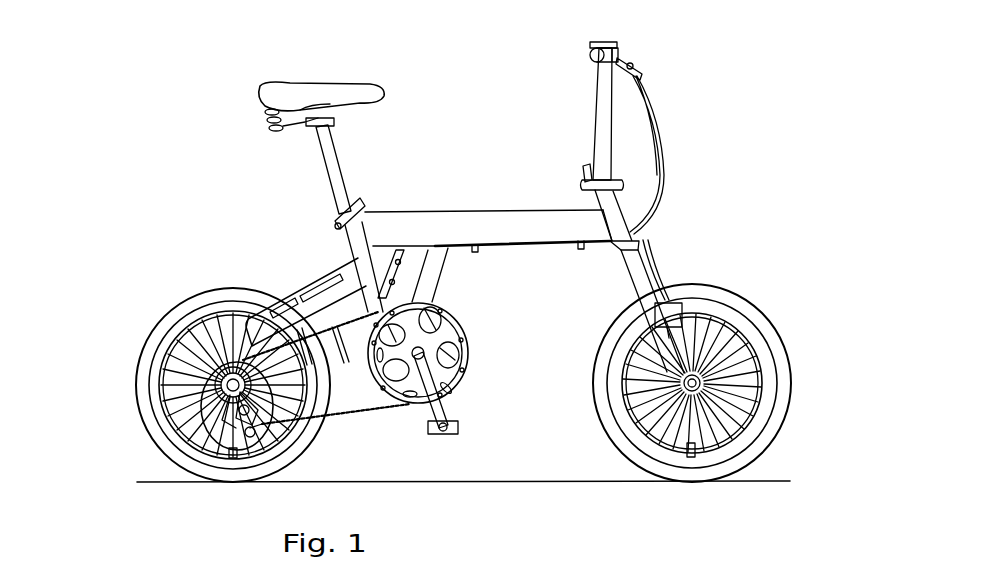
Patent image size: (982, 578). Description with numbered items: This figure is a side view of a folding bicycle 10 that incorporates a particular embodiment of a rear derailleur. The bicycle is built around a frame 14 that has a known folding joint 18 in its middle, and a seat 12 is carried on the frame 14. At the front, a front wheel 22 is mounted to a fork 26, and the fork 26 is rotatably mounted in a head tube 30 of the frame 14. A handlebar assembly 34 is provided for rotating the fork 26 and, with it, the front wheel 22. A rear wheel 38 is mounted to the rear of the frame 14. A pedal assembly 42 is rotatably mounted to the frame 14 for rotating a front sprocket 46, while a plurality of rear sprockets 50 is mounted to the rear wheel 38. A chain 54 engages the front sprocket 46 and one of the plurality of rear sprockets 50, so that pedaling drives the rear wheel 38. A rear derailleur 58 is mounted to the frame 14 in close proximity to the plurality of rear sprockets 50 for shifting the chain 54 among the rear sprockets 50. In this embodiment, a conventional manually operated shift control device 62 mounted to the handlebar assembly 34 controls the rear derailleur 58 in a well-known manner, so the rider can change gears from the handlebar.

The folding bicycle 10 is at (165, 130).
The seat 12 is at (332, 84).
The frame 14 is at (413, 211).
The folding joint 18 is at (488, 211).
The front wheel 22 is at (760, 315).
The fork 26 is at (630, 283).
The head tube 30 is at (612, 217).
The handlebar assembly 34 is at (598, 92).
The rear wheel 38 is at (162, 317).
The pedal assembly 42 is at (485, 373).
The front sprocket 46 is at (452, 318).
The rear sprockets 50 is at (212, 380).
The chain 54 is at (355, 412).
The rear derailleur 58 is at (207, 417).
The shift control device 62 is at (618, 48).